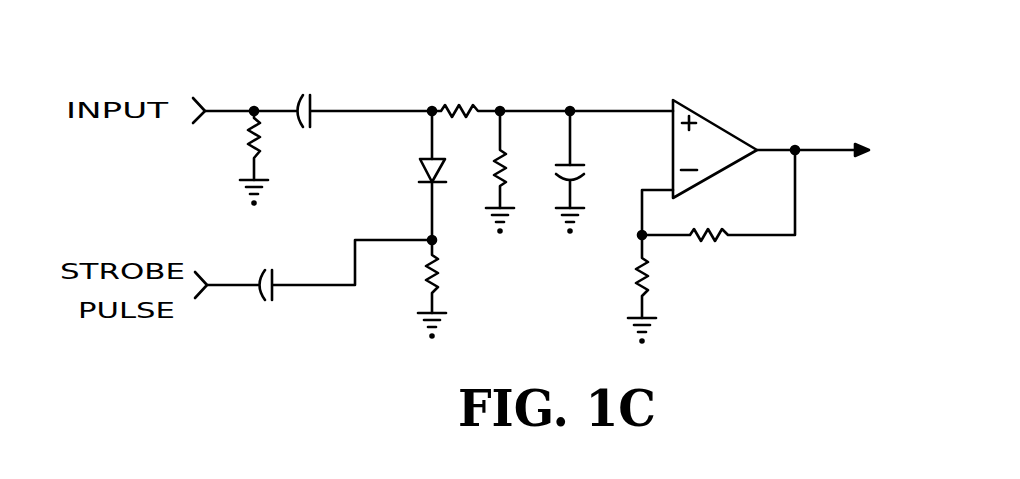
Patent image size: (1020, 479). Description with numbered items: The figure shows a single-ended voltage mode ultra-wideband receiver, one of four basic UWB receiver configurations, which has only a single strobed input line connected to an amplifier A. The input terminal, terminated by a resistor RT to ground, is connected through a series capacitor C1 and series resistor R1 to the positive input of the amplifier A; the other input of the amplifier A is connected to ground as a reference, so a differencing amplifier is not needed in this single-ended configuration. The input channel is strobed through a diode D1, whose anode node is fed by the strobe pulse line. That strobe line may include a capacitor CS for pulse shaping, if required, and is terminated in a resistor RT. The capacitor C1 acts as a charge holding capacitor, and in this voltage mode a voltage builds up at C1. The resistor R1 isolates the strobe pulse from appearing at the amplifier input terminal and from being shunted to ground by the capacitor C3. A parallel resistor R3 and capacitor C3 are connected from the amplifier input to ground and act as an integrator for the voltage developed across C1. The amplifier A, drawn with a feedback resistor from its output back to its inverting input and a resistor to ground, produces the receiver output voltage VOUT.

The terminating resistor RT is at (339, 224).
The series capacitor C1 is at (318, 94).
The series resistor R1 is at (466, 90).
The strobe diode D1 is at (411, 175).
The parallel resistor R3 is at (514, 172).
The parallel capacitor C3 is at (590, 172).
The strobe capacitor CS is at (283, 307).
The amplifier A is at (715, 149).
The output voltage VOUT is at (833, 174).